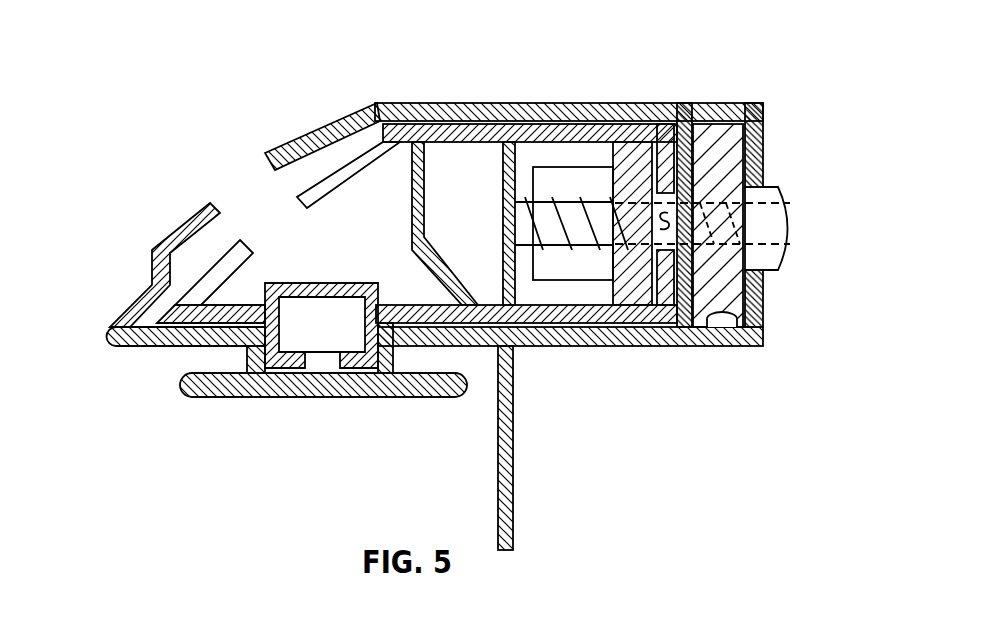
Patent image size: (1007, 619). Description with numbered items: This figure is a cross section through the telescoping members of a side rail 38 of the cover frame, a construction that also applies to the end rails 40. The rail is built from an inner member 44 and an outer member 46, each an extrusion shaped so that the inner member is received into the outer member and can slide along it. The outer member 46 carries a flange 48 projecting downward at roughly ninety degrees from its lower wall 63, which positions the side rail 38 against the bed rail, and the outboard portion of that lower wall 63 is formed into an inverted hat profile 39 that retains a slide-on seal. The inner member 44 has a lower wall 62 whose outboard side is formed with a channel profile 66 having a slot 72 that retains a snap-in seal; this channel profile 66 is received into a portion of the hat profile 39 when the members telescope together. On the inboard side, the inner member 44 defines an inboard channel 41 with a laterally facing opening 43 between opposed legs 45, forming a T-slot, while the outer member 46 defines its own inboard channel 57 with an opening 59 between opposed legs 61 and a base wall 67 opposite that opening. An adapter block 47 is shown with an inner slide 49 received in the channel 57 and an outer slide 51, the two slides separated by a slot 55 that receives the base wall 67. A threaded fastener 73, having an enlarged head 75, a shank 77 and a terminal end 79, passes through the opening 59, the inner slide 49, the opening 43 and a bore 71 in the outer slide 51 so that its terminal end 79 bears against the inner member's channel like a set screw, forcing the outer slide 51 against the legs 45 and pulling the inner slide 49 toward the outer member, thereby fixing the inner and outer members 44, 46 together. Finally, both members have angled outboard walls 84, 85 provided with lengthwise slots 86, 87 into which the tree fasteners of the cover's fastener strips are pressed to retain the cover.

The side rail 38 is at (461, 288).
The end rail 40 is at (485, 287).
The inverted hat profile 39 is at (188, 385).
The inboard channel 41 is at (567, 148).
The laterally facing opening 43 is at (752, 275).
The inner member 44 is at (657, 132).
The opposed legs 45 is at (667, 163).
The outer member 46 is at (637, 112).
The adapter block 47 is at (732, 120).
The flange 48 is at (515, 446).
The inner slide 49 is at (737, 300).
The outer slide 51 is at (628, 302).
The slot 55 is at (667, 224).
The inboard channel 57 is at (732, 318).
The laterally facing opening 59 is at (755, 197).
The opposed legs 61 is at (757, 134).
The lower wall 62 is at (447, 310).
The lower wall 63 is at (425, 337).
The channel profile 66 is at (272, 347).
The base wall 67 is at (668, 218).
The bore 71 is at (660, 232).
The slot 72 is at (320, 360).
The threaded fastener 73 is at (792, 158).
The enlarged head 75 is at (785, 222).
The shank 77 is at (567, 210).
The terminal end 79 is at (517, 223).
The angled outboard wall 84 is at (223, 257).
The angled outboard wall 85 is at (173, 240).
The slot 86 is at (275, 225).
The slot 87 is at (258, 170).